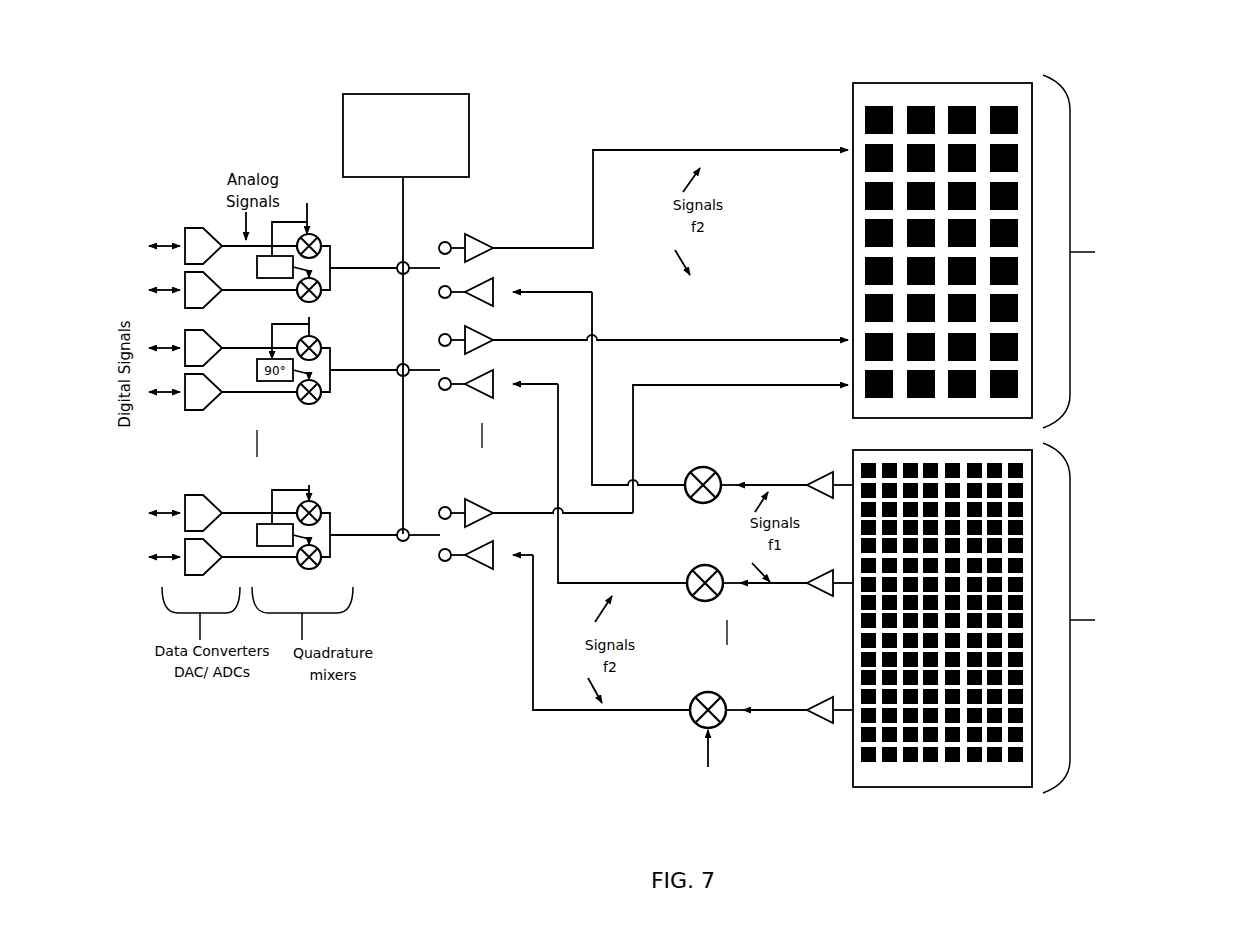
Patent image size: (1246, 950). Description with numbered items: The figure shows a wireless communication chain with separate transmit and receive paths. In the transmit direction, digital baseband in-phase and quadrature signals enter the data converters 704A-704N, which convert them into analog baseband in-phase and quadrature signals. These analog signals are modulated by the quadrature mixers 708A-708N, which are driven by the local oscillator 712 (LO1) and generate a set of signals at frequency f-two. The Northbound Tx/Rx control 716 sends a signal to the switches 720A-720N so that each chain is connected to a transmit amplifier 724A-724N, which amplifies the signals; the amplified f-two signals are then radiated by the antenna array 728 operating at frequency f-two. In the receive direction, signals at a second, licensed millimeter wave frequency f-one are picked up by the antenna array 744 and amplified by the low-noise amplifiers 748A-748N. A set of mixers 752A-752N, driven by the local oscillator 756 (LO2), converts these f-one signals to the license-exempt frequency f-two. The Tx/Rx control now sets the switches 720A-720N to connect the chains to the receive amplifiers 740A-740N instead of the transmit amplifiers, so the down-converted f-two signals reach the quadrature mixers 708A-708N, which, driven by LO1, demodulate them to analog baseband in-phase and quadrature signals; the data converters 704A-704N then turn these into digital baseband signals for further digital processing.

The data converter (DAC/ADC) 704A is at (142, 247).
The data converter (DAC/ADC) 704N is at (143, 530).
The quadrature mixer 708A is at (351, 238).
The quadrature mixer 708N is at (351, 505).
The local oscillator 712 is at (318, 178).
The Northbound Tx/Rx control 716 is at (473, 145).
The switch 720A is at (393, 283).
The switch 720N is at (405, 542).
The transmit amplifier (Tx-Amp) 724A is at (487, 230).
The transmit amplifier (Tx-Amp) 724N is at (483, 500).
The antenna array 728 is at (953, 83).
The receive amplifier (Rx-Amp) 740A is at (512, 286).
The receive amplifier (Rx-Amp) 740N is at (480, 568).
The antenna array 744 is at (967, 787).
The low-noise amplifier (LNA) 748A is at (813, 480).
The low-noise amplifier (LNA) 748N is at (823, 703).
The mixer 752A is at (700, 467).
The mixer 752N is at (693, 720).
The local oscillator (LO2) 756 is at (737, 773).